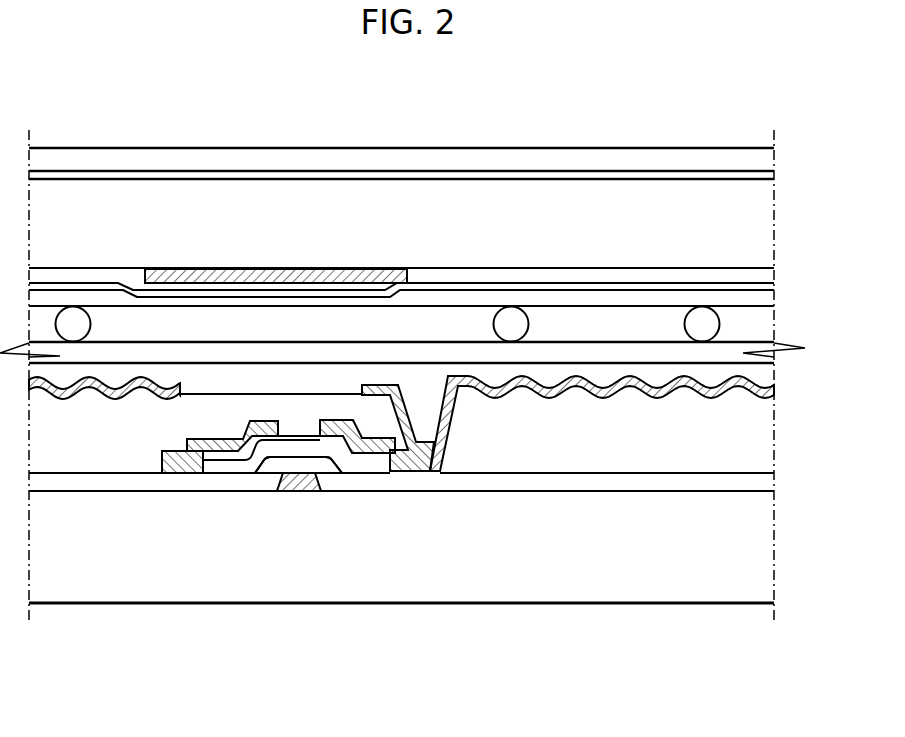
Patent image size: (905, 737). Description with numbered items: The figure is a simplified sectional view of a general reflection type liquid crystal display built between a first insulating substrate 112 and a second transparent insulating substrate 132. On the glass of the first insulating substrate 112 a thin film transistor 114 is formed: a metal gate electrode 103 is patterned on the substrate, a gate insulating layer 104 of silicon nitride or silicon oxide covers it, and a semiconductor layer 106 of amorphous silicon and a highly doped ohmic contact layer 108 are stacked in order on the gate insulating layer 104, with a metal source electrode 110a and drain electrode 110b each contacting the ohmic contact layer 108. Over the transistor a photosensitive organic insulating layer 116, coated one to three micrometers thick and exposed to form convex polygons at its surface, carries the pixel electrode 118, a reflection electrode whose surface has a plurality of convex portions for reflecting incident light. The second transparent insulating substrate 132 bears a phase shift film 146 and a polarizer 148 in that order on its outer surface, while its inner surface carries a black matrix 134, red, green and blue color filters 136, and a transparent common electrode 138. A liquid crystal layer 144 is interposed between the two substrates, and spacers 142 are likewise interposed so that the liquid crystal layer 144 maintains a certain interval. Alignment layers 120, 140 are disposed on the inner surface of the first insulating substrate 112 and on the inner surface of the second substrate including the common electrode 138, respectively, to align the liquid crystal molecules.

The gate electrode 103 is at (295, 477).
The gate insulating layer 104 is at (238, 483).
The semiconductor layer 106 is at (350, 468).
The ohmic contact layer 108 is at (384, 456).
The source electrode 110a is at (181, 474).
The drain electrode 110b is at (438, 520).
The first insulating substrate 112 is at (758, 553).
The thin film transistor 114 is at (336, 545).
The organic insulating layer 116 is at (762, 457).
The pixel electrode 118 is at (762, 402).
The alignment layer 120 is at (762, 373).
The second transparent insulating substrate 132 is at (170, 213).
The black matrix 134 is at (243, 273).
The color filters 136 is at (83, 277).
The transparent common electrode 138 is at (560, 280).
The alignment layer 140 is at (630, 297).
The spacers 142 is at (706, 321).
The liquid crystal layer 144 is at (752, 328).
The phase shift film 146 is at (727, 172).
The polarizer 148 is at (348, 158).